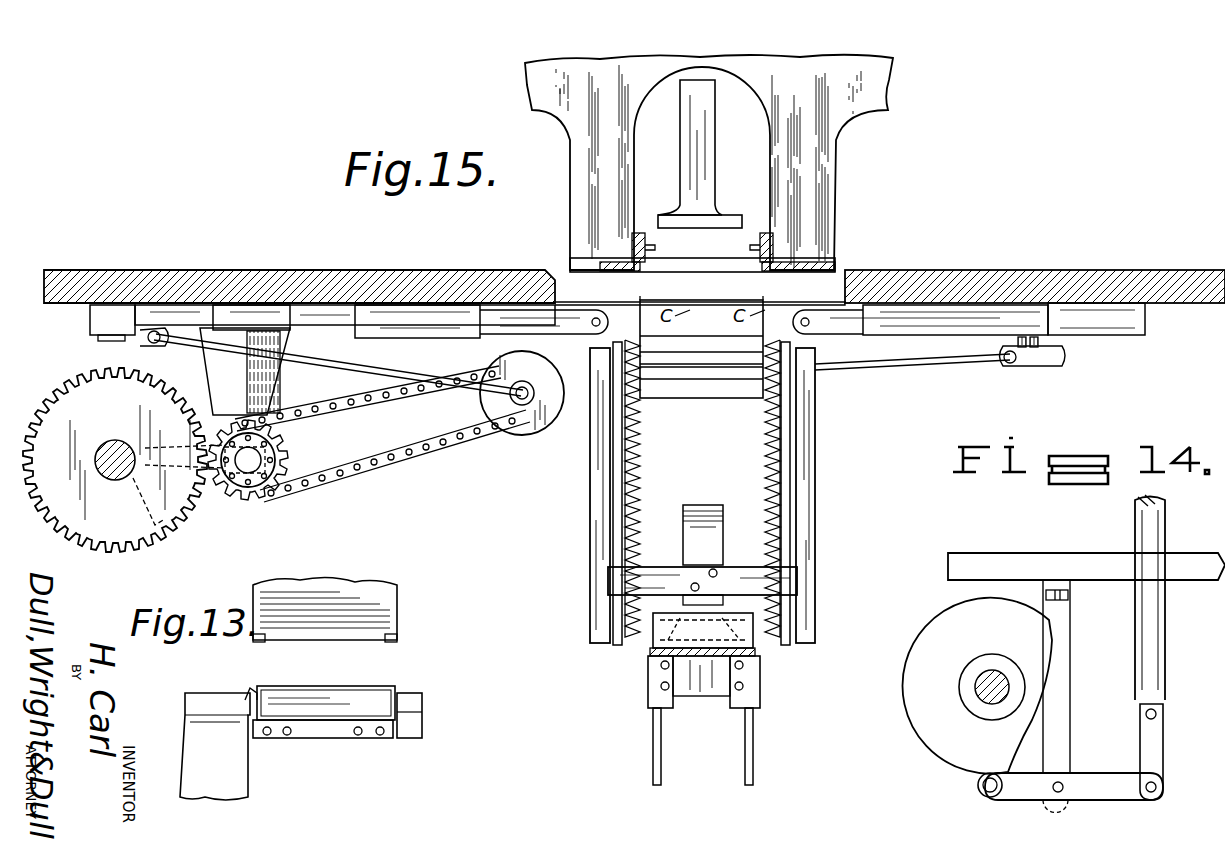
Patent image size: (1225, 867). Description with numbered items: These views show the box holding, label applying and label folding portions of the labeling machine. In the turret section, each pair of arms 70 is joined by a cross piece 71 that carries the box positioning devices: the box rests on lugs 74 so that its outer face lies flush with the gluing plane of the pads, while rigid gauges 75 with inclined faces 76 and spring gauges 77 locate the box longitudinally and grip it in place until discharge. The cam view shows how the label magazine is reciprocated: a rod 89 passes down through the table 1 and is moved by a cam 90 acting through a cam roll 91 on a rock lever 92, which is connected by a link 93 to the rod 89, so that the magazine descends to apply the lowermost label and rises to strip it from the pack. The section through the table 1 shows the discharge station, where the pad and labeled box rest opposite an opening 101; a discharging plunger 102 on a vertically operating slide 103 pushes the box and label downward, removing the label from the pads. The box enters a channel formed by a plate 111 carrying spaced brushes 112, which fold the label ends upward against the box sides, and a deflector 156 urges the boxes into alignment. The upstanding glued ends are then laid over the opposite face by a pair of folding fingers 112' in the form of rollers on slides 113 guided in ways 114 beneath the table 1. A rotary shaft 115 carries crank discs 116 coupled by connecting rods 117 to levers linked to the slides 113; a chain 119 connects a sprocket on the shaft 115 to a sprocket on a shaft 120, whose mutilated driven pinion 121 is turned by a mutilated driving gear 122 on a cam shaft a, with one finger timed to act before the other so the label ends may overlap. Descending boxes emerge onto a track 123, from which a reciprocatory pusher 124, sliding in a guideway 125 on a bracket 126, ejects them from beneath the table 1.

In FIG. 15, the arms 70 is at (583, 155).
In FIG. 15, the vertically operating slide 103 is at (697, 150).
In FIG. 15, the discharging plunger 102 is at (730, 220).
In FIG. 15, the cross piece 71 is at (722, 263).
In FIG. 15, the table 1 is at (410, 284).
In FIG. 15, the opening 101 is at (843, 270).
In FIG. 15, the ways 114 is at (507, 288).
In FIG. 15, the folding fingers 112' is at (671, 339).
In FIG. 15, the slides 113 is at (565, 318).
In FIG. 15, the connecting rods 117 is at (355, 367).
In FIG. 15, the crank discs 116 is at (520, 418).
In FIG. 15, the rotary shaft 115 is at (513, 402).
In FIG. 15, the chain 119 is at (405, 463).
In FIG. 15, the mutilated driven pinion 121 is at (293, 446).
In FIG. 15, the shaft 120 is at (245, 458).
In FIG. 15, the mutilated driving gear 122 is at (83, 393).
In FIG. 15, the plate 111 is at (605, 505).
In FIG. 15, the brushes 112 is at (702, 488).
In FIG. 15, the deflector 156 is at (690, 505).
In FIG. 15, the guideway 125 is at (660, 640).
In FIG. 15, the reciprocatory pusher 124 is at (757, 647).
In FIG. 15, the track 123 is at (647, 657).
In FIG. 15, the bracket 126 is at (657, 748).
In FIG. 14, the rod 89 is at (1165, 638).
In FIG. 14, the cam 90 is at (940, 622).
In FIG. 14, the cam shaft a is at (992, 680).
In FIG. 14, the cam roll 91 is at (980, 788).
In FIG. 14, the rock lever 92 is at (1110, 800).
In FIG. 14, the link 93 is at (1150, 752).
In FIG. 13, the spring gauges 77 is at (395, 690).
In FIG. 13, the rigid gauges 75 is at (250, 690).
In FIG. 13, the inclined faces 76 is at (262, 690).
In FIG. 13, the lugs 74 is at (280, 738).